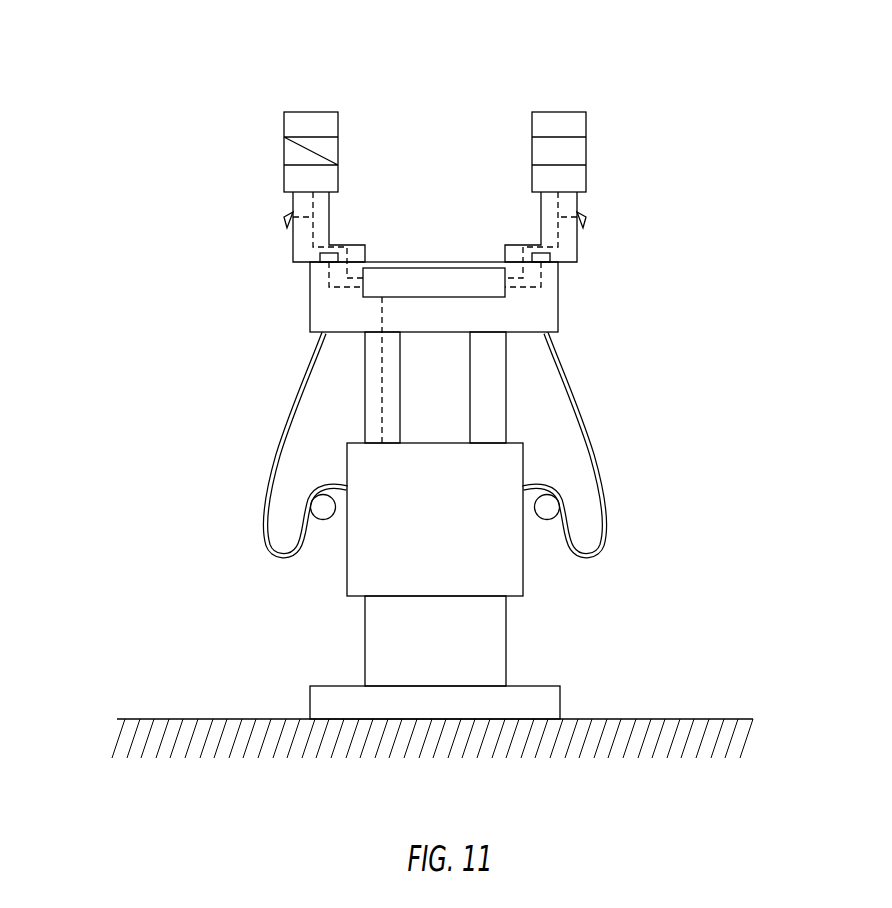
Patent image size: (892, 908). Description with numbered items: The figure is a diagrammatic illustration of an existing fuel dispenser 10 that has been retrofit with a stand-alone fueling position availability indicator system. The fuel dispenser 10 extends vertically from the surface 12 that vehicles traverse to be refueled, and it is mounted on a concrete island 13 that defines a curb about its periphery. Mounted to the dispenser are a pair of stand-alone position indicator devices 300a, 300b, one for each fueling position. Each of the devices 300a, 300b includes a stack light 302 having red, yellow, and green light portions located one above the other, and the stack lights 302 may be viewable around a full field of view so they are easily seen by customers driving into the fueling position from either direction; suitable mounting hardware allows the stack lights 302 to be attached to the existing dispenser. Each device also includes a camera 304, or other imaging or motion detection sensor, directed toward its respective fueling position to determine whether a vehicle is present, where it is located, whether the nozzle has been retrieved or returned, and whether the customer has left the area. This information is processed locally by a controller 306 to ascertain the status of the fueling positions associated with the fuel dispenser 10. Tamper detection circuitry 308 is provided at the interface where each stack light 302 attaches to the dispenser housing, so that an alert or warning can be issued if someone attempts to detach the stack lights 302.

The stand-alone position indicator device 300a is at (407, 147).
The stand-alone position indicator device 300b is at (590, 64).
The stack light 302 is at (245, 146).
The camera 304 is at (288, 214).
The controller 306 is at (463, 268).
The tamper detection circuitry 308 is at (327, 263).
The fuel dispenser 10 is at (506, 650).
The surface 12 is at (655, 719).
The island 13 is at (318, 686).